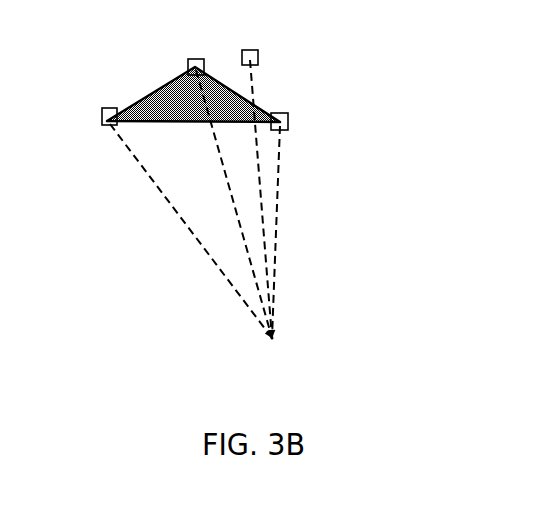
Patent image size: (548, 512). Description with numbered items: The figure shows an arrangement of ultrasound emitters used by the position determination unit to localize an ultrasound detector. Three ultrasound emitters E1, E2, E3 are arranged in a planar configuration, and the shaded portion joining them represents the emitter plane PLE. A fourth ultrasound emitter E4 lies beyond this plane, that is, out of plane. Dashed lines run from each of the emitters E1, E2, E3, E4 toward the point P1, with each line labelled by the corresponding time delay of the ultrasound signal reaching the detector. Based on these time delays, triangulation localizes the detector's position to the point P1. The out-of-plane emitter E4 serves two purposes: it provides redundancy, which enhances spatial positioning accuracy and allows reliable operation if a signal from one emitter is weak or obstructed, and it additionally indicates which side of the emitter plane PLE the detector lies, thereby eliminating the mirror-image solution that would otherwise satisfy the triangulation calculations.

The emitter plane PLE is at (175, 93).
The ultrasound emitter E1 is at (101, 110).
The ultrasound emitter E2 is at (189, 62).
The ultrasound emitter E3 is at (288, 128).
The out-of-plane ultrasound emitter E4 is at (242, 51).
The point P1 is at (290, 356).